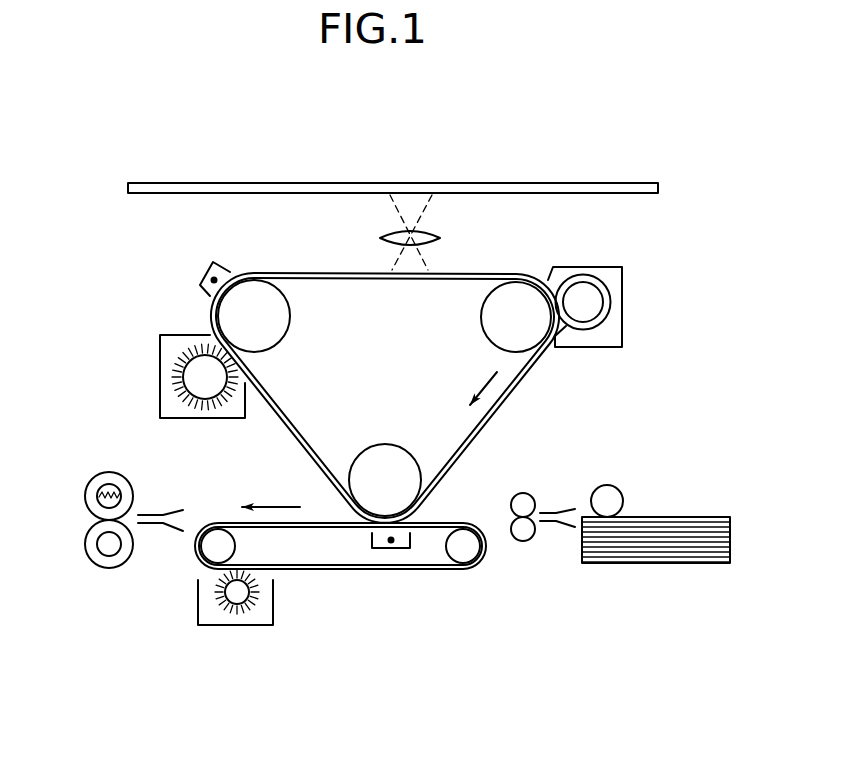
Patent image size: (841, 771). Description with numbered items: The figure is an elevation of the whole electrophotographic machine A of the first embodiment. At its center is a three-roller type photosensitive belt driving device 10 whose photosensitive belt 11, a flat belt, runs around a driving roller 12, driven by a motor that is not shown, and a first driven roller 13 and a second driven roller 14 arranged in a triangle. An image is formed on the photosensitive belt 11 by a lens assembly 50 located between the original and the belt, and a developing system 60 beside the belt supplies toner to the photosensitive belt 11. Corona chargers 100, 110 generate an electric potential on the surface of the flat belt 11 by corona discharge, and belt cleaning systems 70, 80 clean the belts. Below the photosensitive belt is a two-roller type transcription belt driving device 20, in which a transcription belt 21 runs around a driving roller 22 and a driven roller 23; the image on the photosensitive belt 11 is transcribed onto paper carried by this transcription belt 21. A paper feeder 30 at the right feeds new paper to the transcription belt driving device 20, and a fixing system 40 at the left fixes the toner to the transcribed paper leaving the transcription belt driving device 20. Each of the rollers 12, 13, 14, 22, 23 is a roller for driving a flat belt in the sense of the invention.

The electrophotographic machine A is at (127, 150).
The photosensitive belt driving device 10 is at (514, 414).
The photosensitive belt 11 is at (463, 450).
The driving roller 12 is at (490, 311).
The first driven roller 13 is at (278, 319).
The second driven roller 14 is at (389, 460).
The transcription belt driving device 20 is at (356, 580).
The transcription belt 21 is at (427, 570).
The driving roller 22 is at (474, 553).
The driven roller 23 is at (212, 552).
The paper feeder 30 is at (652, 502).
The fixing system 40 is at (99, 466).
The lens assembly 50 is at (455, 237).
The developing system 60 is at (633, 302).
The belt cleaning system 70 is at (143, 377).
The belt cleaning system 80 is at (252, 640).
The corona charger 100 is at (394, 549).
The corona charger 110 is at (205, 268).